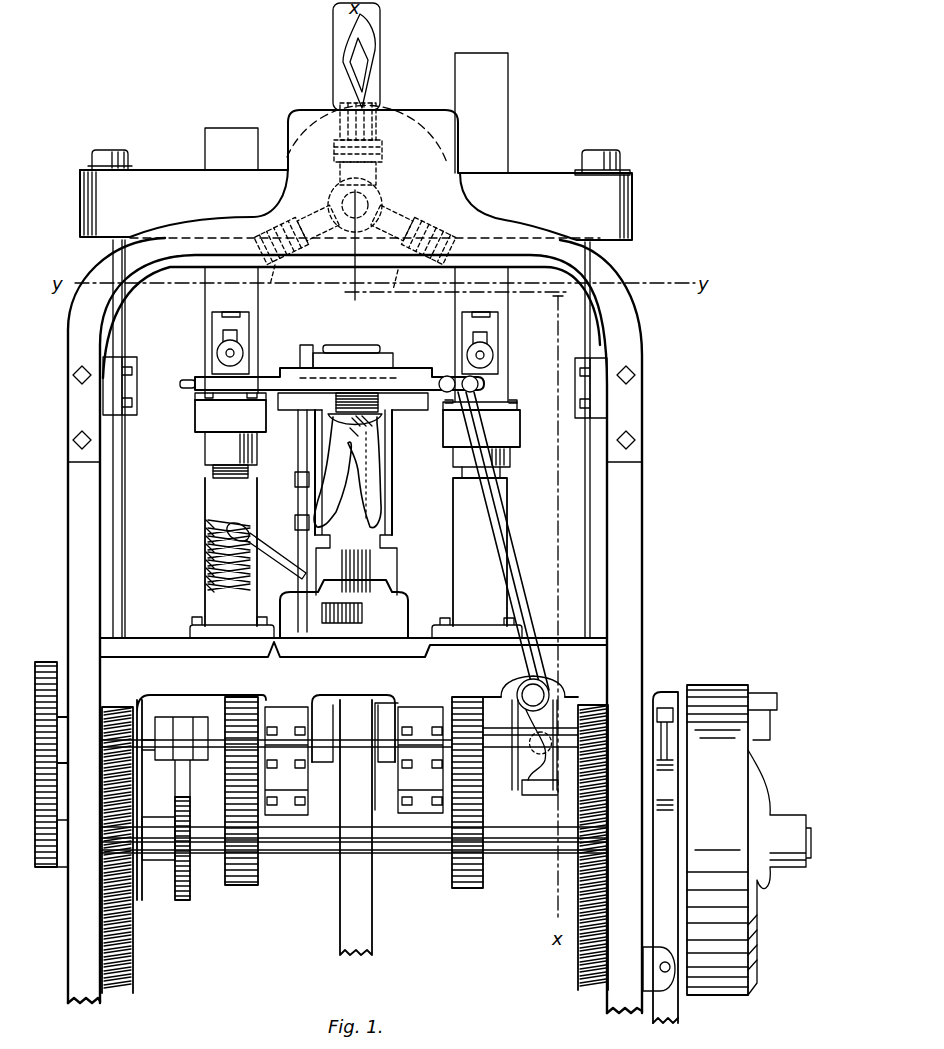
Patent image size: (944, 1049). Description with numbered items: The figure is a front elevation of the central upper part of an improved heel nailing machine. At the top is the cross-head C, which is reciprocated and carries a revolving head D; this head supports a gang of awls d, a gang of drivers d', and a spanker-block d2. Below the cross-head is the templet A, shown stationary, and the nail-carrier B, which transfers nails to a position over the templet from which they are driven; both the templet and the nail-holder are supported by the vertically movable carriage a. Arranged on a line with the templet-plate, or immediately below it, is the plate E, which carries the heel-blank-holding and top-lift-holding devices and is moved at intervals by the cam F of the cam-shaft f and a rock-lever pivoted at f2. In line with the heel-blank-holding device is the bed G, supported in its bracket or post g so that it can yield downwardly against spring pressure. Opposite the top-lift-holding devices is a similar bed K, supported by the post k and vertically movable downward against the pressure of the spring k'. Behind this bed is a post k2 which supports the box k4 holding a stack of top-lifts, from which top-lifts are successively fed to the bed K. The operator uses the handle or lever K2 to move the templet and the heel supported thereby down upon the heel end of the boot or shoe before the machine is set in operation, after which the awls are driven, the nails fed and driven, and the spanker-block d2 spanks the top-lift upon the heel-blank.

The cross-head C is at (356, 146).
The revolving head D is at (372, 198).
The drivers d' is at (367, 56).
The awls d is at (274, 288).
The spanker-block d2 is at (389, 292).
The box k4 is at (231, 330).
The post k2 is at (481, 334).
The templet A is at (393, 366).
The nail-carrier B is at (346, 344).
The carriage a is at (360, 460).
The plate E is at (298, 396).
The bed K is at (220, 405).
The post k is at (207, 476).
The spring k' is at (211, 556).
The handle or lever K2 is at (249, 529).
The bed G is at (488, 425).
The bracket or post g is at (477, 557).
The cam-shaft f is at (503, 518).
The pivot f2 is at (548, 688).
The cam F is at (522, 795).